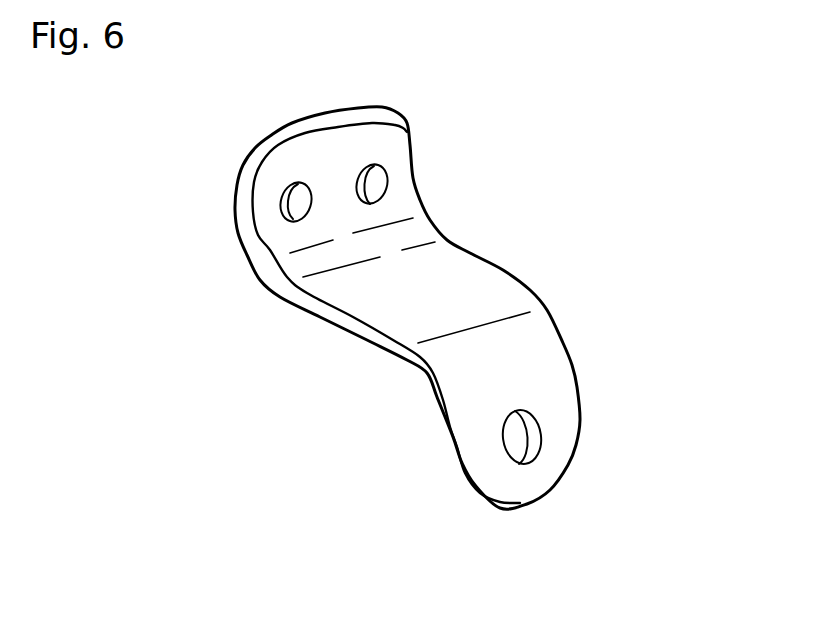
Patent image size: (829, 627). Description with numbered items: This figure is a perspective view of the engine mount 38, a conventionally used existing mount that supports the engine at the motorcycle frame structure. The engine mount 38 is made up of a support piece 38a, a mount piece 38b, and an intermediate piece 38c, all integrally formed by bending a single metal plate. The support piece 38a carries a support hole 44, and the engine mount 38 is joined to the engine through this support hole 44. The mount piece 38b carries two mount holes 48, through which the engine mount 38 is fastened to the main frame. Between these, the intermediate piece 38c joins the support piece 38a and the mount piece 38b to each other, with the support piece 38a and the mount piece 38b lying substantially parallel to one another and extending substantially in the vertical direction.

The engine mount 38 is at (450, 317).
The support piece 38a is at (530, 373).
The mount piece 38b is at (400, 201).
The intermediate piece 38c is at (392, 317).
The support hole 44 is at (512, 447).
The mount holes 48 is at (290, 202).